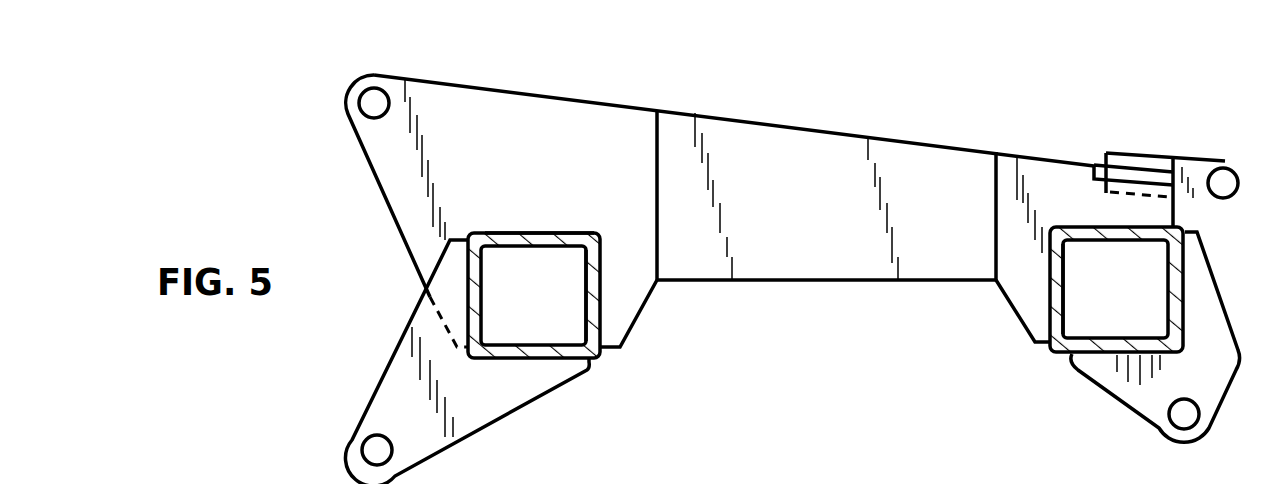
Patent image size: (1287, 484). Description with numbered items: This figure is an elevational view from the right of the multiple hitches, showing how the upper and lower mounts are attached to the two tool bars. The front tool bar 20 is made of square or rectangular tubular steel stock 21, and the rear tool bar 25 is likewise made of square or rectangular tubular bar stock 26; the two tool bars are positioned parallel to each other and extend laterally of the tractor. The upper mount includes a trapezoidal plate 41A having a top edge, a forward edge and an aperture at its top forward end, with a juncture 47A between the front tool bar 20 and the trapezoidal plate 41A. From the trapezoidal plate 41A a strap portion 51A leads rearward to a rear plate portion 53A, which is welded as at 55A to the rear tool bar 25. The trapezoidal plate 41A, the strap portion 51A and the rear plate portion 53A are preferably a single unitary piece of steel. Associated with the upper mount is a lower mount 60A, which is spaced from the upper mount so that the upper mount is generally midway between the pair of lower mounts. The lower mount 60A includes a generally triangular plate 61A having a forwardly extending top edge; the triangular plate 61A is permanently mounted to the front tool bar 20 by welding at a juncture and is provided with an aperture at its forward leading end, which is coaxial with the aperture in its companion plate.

The front tool bar 20 is at (546, 223).
The tubular steel stock 21 is at (597, 290).
The rear tool bar 25 is at (1196, 275).
The tubular bar stock 26 is at (1063, 304).
The trapezoidal plate 41A is at (547, 93).
The juncture 47A is at (502, 244).
The strap portion 51A is at (850, 222).
The rear plate portion 53A is at (1057, 179).
The weld 55A is at (1048, 255).
The lower mount 60A is at (389, 346).
The triangular plate 61A is at (367, 395).